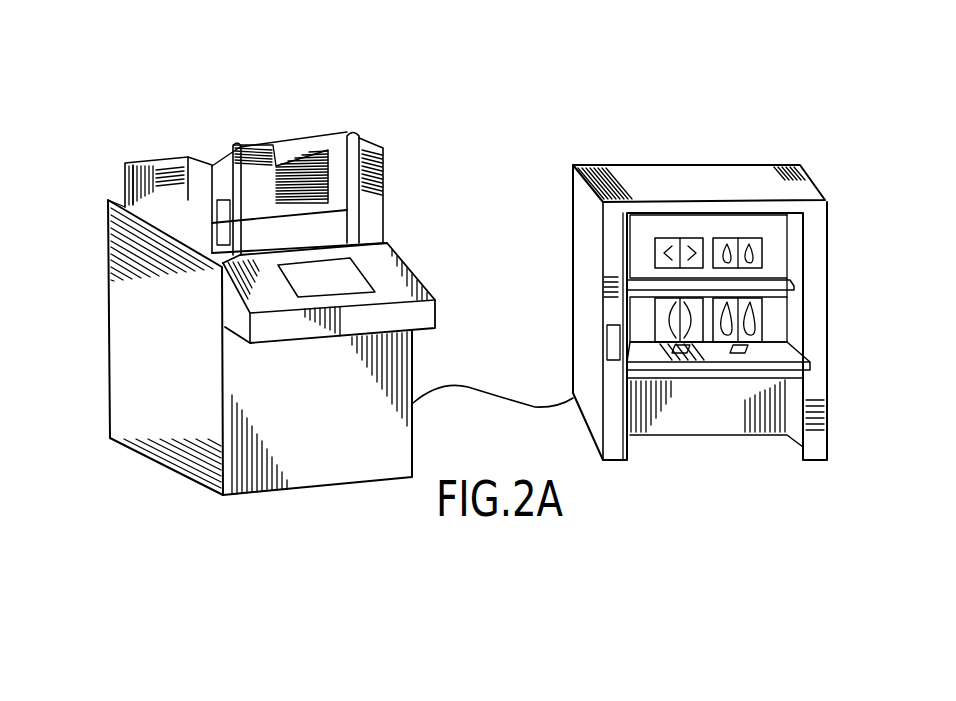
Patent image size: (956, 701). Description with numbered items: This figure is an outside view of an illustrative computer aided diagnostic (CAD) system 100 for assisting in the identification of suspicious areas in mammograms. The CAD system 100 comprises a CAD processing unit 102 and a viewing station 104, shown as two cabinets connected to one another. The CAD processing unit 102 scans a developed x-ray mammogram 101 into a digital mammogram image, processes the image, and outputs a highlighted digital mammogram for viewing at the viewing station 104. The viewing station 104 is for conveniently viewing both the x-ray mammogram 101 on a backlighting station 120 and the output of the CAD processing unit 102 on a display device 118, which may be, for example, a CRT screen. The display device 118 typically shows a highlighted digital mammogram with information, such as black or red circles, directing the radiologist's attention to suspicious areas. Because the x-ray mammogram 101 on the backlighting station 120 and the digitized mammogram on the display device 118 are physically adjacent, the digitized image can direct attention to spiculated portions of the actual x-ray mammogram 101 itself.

The computer aided diagnostic (CAD) system 100 is at (458, 108).
The x-ray mammogram 101 is at (265, 177).
The CAD processing unit 102 is at (108, 326).
The viewing station 104 is at (573, 262).
The display device 118 is at (757, 332).
The backlighting station 120 is at (773, 254).